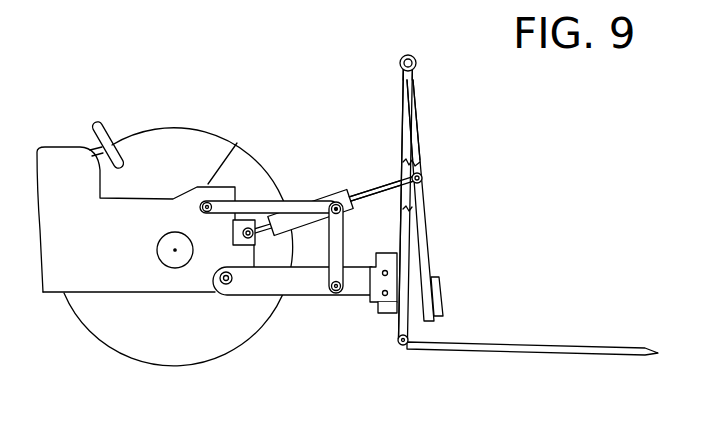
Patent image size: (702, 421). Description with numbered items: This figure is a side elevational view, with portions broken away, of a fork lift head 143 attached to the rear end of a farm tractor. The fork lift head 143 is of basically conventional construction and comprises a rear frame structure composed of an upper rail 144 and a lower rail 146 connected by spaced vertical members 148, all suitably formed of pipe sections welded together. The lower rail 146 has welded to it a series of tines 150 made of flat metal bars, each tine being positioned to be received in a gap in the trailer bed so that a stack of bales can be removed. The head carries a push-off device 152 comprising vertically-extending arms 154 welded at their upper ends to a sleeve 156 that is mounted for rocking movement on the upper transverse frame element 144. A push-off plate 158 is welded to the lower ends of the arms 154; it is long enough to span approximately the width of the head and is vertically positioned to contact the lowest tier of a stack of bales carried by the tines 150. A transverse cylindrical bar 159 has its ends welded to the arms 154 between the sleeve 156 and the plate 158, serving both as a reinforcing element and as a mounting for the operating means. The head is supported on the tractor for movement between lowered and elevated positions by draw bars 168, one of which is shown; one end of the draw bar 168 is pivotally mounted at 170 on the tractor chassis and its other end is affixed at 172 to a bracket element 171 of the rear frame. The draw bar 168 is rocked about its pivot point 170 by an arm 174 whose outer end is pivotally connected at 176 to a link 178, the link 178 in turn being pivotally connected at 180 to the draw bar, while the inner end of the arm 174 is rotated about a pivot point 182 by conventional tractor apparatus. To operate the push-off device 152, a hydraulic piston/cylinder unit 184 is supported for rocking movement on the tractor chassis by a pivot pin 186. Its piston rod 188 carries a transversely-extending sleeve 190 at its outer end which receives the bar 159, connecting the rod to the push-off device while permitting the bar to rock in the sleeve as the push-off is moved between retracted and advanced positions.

The fork lift head 143 is at (398, 90).
The upper rail 144 is at (403, 70).
The lower rail 146 is at (398, 350).
The vertical members 148 is at (408, 95).
The tines 150 is at (540, 343).
The push-off device 152 is at (434, 224).
The vertically-extending arms 154 is at (418, 140).
The sleeve 156 is at (415, 58).
The push-off plate 158 is at (442, 300).
The transverse cylindrical bar 159 is at (422, 182).
The draw bar 168 is at (298, 282).
The pivot 170 is at (229, 285).
The bracket element 171 is at (380, 316).
The draw bar attachment 172 is at (383, 296).
The arm 174 is at (285, 207).
The pivot 176 is at (343, 211).
The link 178 is at (338, 250).
The pivot 180 is at (343, 296).
The pivot point 182 is at (203, 208).
The hydraulic piston/cylinder unit 184 is at (332, 195).
The pivot pin 186 is at (242, 225).
The piston rod 188 is at (381, 187).
The sleeve 190 is at (422, 177).